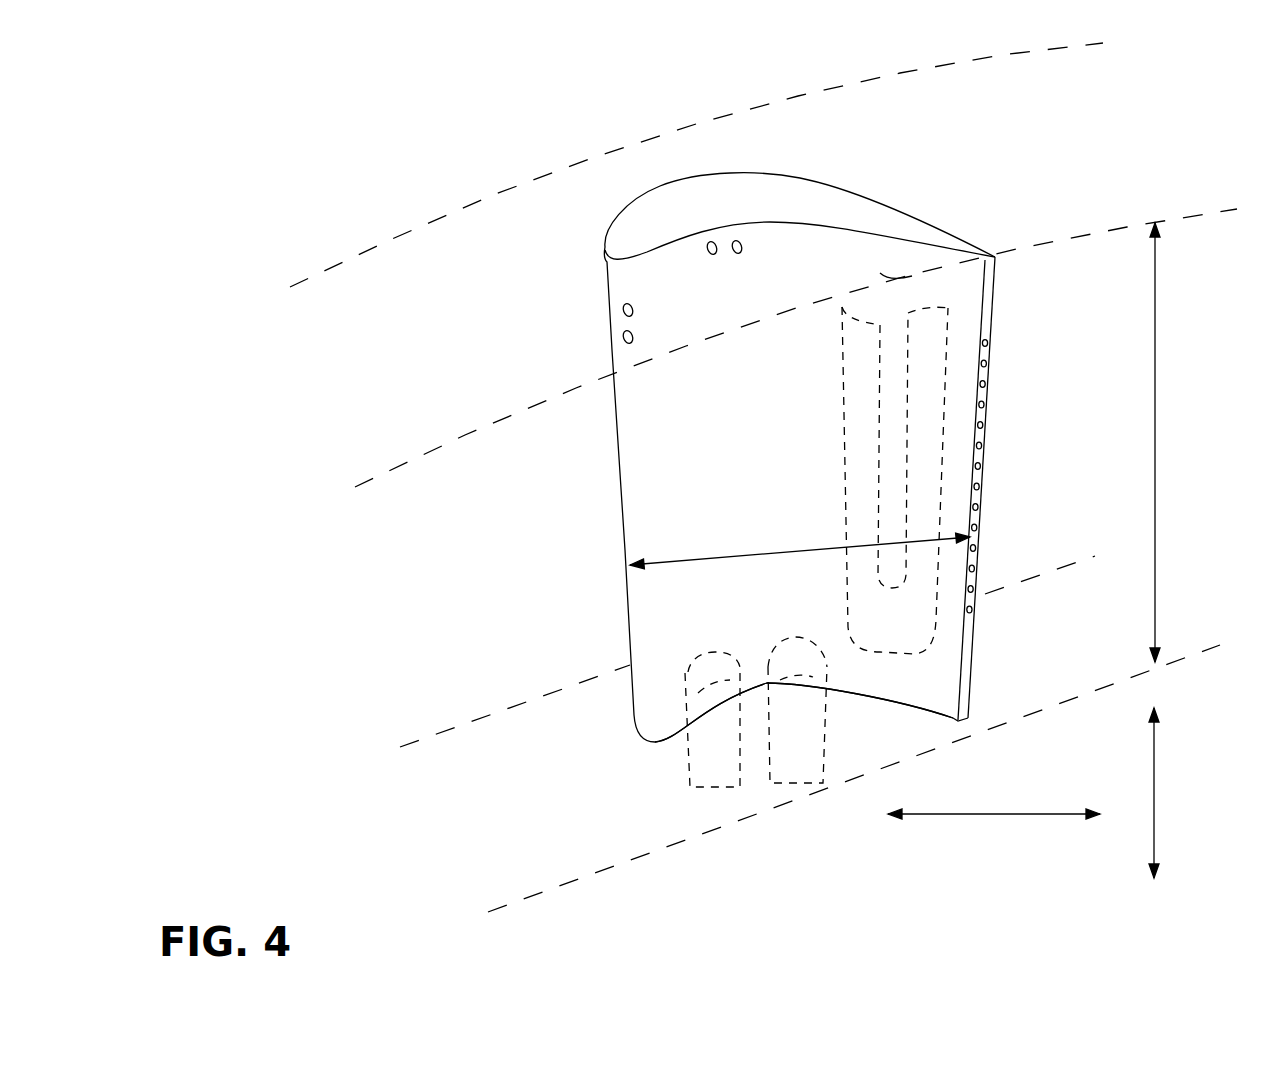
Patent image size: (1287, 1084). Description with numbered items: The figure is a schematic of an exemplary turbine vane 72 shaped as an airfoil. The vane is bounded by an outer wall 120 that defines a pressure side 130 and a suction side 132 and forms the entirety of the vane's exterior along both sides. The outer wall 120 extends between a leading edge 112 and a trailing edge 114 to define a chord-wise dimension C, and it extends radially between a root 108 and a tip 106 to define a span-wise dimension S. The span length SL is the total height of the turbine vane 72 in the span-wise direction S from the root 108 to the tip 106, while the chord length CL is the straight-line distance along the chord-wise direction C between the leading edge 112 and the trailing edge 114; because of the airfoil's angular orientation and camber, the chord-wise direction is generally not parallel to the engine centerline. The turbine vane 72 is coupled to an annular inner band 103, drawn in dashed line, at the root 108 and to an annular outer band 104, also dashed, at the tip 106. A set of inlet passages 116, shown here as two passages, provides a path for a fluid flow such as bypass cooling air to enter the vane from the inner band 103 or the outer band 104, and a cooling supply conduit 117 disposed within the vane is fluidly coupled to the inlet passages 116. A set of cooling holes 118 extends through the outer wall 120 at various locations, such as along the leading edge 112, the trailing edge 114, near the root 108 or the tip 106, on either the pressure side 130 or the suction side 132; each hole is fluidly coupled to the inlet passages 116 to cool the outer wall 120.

The turbine vane 72 is at (455, 152).
The annular inner band 103 is at (628, 897).
The annular outer band 104 is at (600, 123).
The tip 106 is at (776, 202).
The root 108 is at (942, 707).
The leading edge 112 is at (610, 272).
The trailing edge 114 is at (983, 498).
The set of inlet passages 116 is at (690, 656).
The cooling supply conduit 117 is at (872, 398).
The set of cooling holes 118 is at (622, 311).
The outer wall 120 is at (898, 275).
The pressure side 130 is at (950, 287).
The suction side 132 is at (847, 185).
The span length SL is at (1155, 463).
The span-wise dimension S is at (1145, 793).
The chord-wise dimension C is at (994, 825).
The chord length CL is at (752, 550).